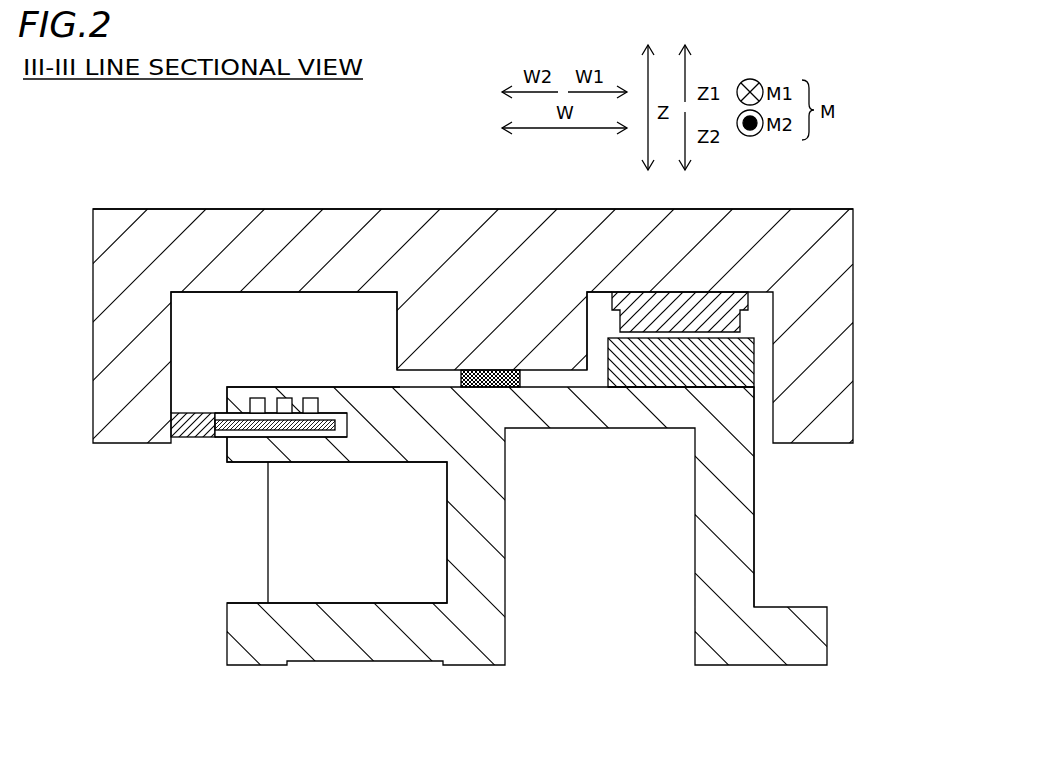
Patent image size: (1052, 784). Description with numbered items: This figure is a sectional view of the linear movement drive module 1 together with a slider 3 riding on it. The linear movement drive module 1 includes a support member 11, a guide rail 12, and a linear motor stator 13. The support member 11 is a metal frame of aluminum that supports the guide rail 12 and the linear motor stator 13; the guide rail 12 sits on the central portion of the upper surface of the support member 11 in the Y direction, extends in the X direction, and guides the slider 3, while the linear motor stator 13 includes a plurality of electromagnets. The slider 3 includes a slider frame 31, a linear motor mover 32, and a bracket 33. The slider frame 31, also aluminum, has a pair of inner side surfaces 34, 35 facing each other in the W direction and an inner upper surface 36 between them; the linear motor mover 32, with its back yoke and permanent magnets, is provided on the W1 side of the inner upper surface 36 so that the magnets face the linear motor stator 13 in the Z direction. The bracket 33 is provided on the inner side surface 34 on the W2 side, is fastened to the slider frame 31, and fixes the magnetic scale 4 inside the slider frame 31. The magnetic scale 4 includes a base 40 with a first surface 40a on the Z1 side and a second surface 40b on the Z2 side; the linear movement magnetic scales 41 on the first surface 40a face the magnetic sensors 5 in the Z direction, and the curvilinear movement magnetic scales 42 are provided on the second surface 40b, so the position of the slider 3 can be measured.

The linear movement drive module 1 is at (762, 512).
The support member 11 is at (756, 548).
The guide rail 12 is at (495, 388).
The linear motor stator 13 is at (632, 378).
The slider 3 is at (405, 207).
The slider frame 31 is at (853, 209).
The linear motor mover 32 is at (749, 302).
The bracket 33 is at (181, 440).
The inner side surface 34 is at (185, 355).
The inner side surface 35 is at (757, 370).
The inner upper surface 36 is at (598, 305).
The magnetic scale 4 is at (222, 441).
The base 40 is at (222, 412).
The first surface 40a is at (247, 415).
The second surface 40b is at (228, 438).
The linear movement magnetic scale 41 is at (318, 420).
The curvilinear movement magnetic scale 42 is at (310, 438).
The magnetic sensor 5 is at (258, 398).